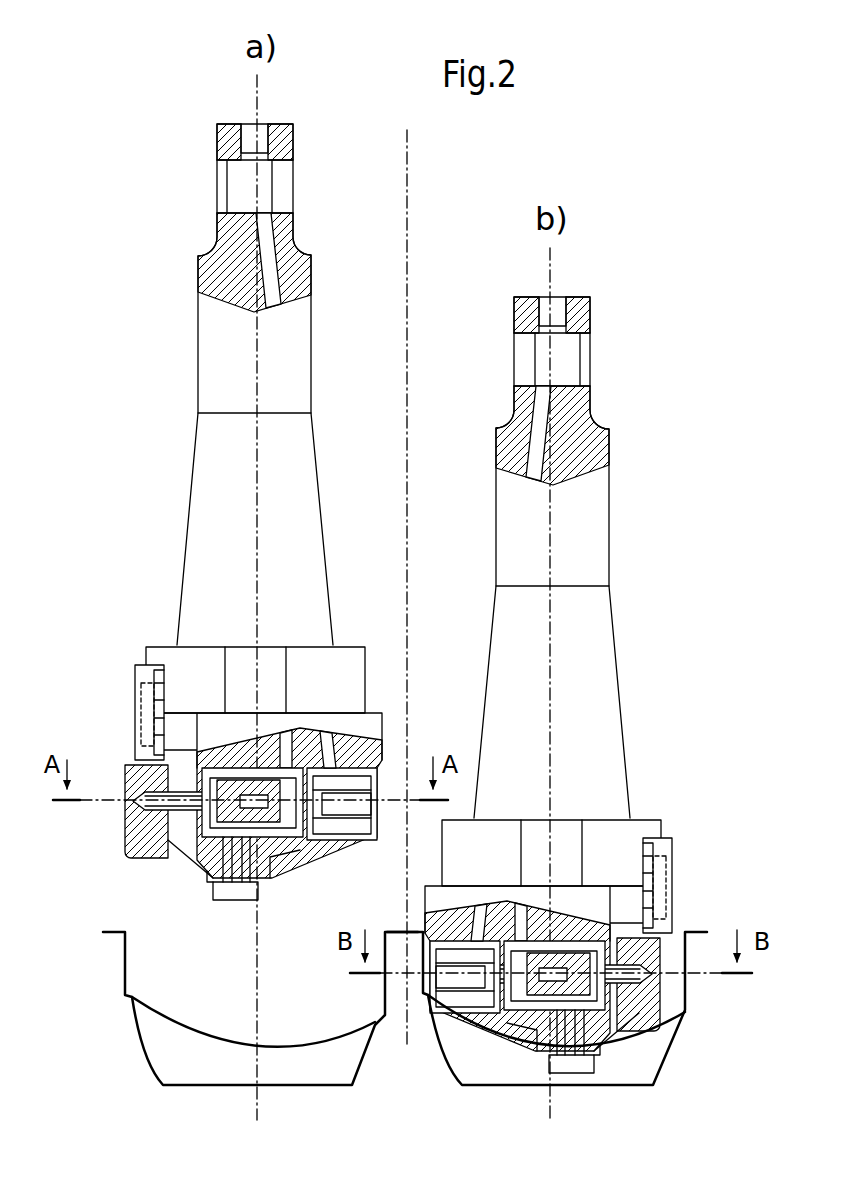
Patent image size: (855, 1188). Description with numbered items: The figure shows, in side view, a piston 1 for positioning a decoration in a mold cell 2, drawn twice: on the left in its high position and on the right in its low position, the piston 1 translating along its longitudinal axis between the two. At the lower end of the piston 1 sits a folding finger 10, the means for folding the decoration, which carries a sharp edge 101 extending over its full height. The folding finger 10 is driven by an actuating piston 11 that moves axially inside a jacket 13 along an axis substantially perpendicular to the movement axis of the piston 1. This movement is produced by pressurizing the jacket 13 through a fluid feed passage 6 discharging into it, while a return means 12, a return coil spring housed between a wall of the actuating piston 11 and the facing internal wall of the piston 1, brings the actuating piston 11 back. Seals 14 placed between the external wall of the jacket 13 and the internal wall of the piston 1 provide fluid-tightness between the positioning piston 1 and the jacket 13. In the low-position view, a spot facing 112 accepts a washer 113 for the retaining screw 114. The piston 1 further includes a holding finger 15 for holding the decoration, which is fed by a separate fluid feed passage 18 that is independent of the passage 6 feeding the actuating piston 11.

The piston 1 is at (194, 357).
The collecting trough 2 is at (118, 978).
The fluid feed passage 6 is at (287, 729).
The folding finger 10 is at (121, 822).
The actuating piston 11 is at (200, 842).
The return means 12 is at (602, 1045).
The jacket 13 is at (575, 935).
The seals 14 is at (514, 1042).
The holding finger 15 is at (456, 938).
The fluid feed passage 18 is at (332, 728).
The sharp edge 101 is at (115, 773).
The spot facing 112 is at (523, 1055).
The washer 113 is at (275, 890).
The retaining screw 114 is at (223, 905).